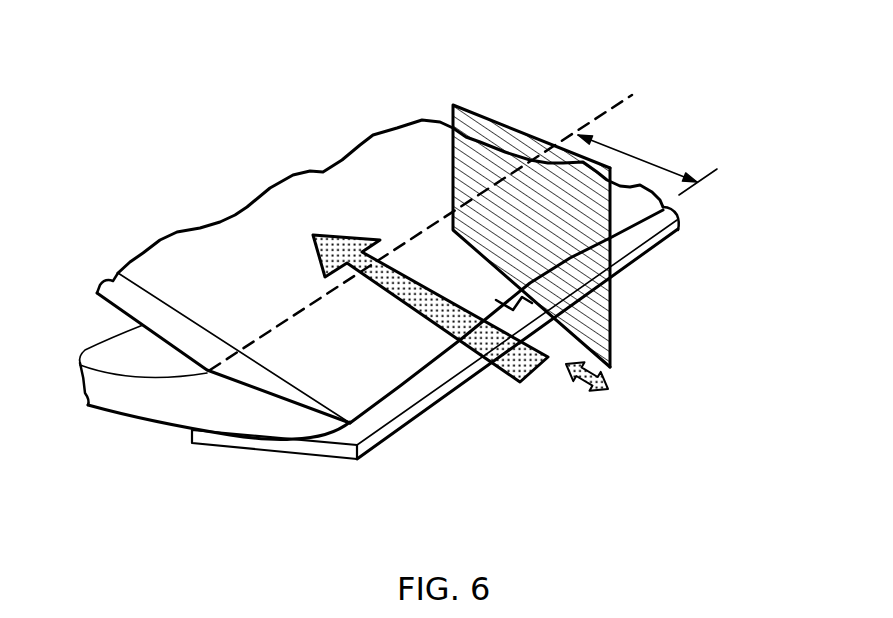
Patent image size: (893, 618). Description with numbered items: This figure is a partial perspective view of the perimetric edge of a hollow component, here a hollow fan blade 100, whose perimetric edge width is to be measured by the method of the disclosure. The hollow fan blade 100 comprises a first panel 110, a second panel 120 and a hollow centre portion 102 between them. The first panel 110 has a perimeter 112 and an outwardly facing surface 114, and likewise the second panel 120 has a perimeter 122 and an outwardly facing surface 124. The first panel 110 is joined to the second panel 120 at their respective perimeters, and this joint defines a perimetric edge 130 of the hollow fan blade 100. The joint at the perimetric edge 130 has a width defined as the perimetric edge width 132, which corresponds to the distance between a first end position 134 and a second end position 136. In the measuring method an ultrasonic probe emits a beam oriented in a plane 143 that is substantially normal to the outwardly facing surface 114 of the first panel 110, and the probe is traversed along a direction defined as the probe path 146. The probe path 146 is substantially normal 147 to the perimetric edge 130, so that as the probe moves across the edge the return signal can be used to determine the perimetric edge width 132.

The hollow fan blade 100 is at (422, 260).
The centre portion 102 is at (118, 283).
The first panel 110 is at (260, 222).
The perimeter 112 is at (678, 225).
The outwardly facing surface 114 is at (387, 157).
The second panel 120 is at (187, 409).
The perimeter 122 is at (372, 440).
The outwardly facing surface 124 is at (390, 393).
The perimetric edge 130 is at (633, 226).
The perimetric edge width 132 is at (636, 157).
The first end position 134 is at (717, 175).
The second end position 136 is at (603, 115).
The plane 143 is at (612, 312).
The probe path 146 is at (527, 370).
The normal 147 is at (610, 337).